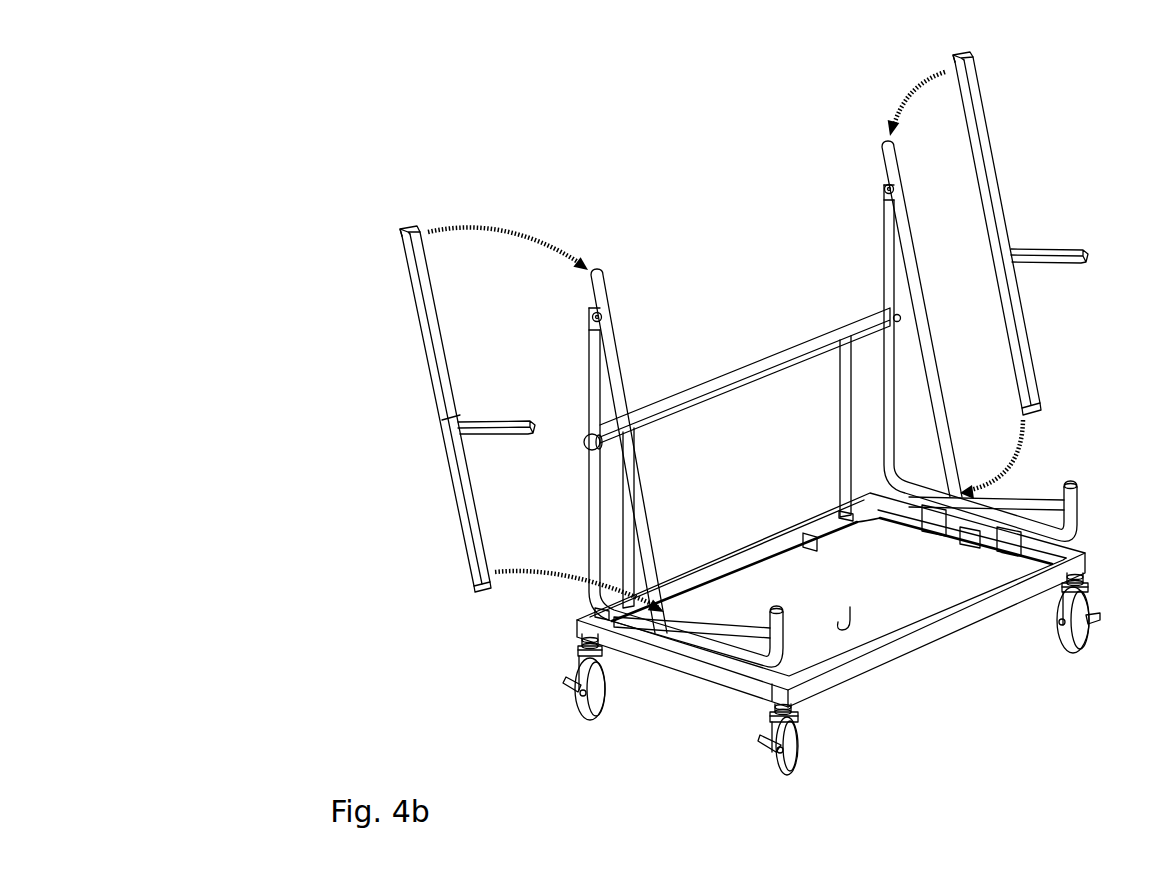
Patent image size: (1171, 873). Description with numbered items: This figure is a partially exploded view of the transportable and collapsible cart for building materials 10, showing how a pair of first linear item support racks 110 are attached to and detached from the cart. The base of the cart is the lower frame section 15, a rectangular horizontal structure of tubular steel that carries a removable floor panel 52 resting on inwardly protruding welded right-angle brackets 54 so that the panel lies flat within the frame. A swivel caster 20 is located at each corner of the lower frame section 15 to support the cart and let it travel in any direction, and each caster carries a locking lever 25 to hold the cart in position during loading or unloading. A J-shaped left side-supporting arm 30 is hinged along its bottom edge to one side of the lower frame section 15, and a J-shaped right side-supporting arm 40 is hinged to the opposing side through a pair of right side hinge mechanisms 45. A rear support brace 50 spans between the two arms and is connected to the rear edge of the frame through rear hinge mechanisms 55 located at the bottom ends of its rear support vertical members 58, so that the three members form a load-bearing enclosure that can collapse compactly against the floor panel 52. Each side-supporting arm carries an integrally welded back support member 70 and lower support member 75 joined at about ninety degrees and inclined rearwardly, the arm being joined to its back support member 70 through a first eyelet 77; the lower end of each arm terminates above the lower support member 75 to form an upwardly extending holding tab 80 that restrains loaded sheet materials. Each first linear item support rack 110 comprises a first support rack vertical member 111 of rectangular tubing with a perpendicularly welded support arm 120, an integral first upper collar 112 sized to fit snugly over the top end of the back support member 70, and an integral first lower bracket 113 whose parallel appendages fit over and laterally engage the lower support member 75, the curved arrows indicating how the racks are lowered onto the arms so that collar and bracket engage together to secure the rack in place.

The transportable and collapsible cart for building materials 10 is at (296, 138).
The lower frame section 15 is at (652, 656).
The swivel casters 20 is at (594, 722).
The locking lever 25 is at (565, 679).
The left side-supporting arm 30 is at (590, 372).
The right side-supporting arm 40 is at (884, 243).
The right side hinge mechanisms 45 is at (1008, 556).
The rear support brace 50 is at (737, 322).
The floor panel 52 is at (850, 632).
The right-angle brackets 54 is at (815, 547).
The rear hinge mechanisms 55 is at (596, 611).
The rear support vertical members 58 is at (632, 570).
The back support member 70 is at (610, 324).
The lower support member 75 is at (703, 636).
The first eyelets 77 is at (592, 317).
The holding tab 80 is at (1075, 484).
The first linear item support rack 110 is at (428, 350).
The first support rack vertical member 111 is at (466, 523).
The first upper collar 112 is at (400, 232).
The first lower bracket 113 is at (473, 588).
The support arm 120 is at (480, 437).